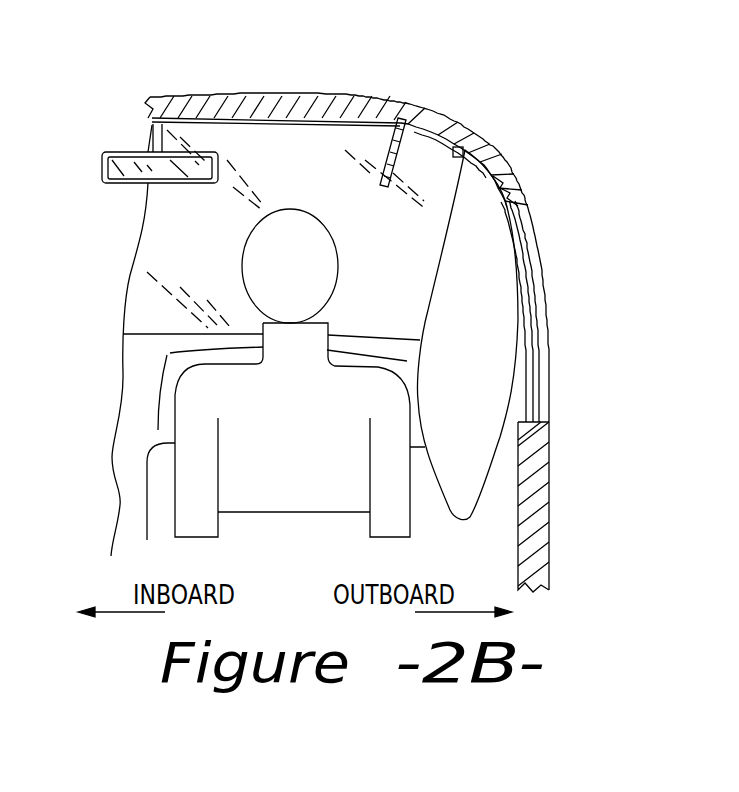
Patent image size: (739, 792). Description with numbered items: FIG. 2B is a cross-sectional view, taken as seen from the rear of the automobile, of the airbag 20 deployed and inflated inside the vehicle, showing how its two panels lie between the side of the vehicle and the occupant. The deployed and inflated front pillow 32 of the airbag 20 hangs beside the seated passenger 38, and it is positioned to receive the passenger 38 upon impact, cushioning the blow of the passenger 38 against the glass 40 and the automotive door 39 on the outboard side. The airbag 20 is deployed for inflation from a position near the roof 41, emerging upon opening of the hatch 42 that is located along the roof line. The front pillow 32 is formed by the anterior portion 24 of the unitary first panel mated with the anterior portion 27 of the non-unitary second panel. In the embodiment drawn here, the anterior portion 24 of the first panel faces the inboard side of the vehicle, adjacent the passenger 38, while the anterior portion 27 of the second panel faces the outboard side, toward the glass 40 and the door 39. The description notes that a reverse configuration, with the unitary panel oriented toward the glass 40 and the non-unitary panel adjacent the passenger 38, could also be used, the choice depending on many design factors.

The airbag 20 is at (545, 105).
The anterior portion of the first panel 24 is at (433, 268).
The anterior portion of the second panel 27 is at (493, 455).
The front pillow 32 is at (485, 273).
The passenger 38 is at (183, 383).
The automotive door 39 is at (548, 552).
The glass 40 is at (537, 355).
The roof 41 is at (262, 94).
The hatch 42 is at (398, 142).